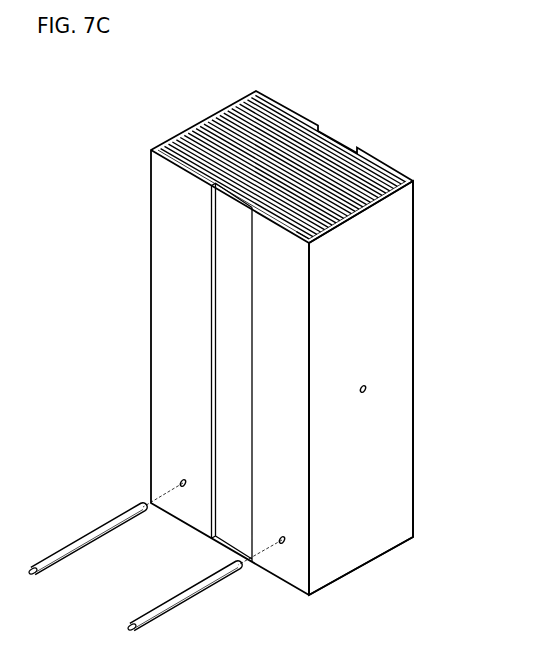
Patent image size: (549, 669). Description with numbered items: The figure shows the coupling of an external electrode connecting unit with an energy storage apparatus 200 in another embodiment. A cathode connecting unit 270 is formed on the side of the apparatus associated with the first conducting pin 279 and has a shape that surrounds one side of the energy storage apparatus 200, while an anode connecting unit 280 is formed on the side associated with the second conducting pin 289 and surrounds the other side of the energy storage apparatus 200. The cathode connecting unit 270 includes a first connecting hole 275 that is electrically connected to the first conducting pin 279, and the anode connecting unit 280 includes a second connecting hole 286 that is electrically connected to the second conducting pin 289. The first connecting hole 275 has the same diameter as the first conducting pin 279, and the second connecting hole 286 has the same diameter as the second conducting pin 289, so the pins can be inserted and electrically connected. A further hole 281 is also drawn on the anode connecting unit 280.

The cathode connecting unit 270 is at (158, 233).
The energy storage apparatus 200 is at (227, 382).
The anode connecting unit 280 is at (395, 252).
The first connecting hole 275 is at (181, 483).
The side hole 281 is at (367, 388).
The second connecting hole 286 is at (287, 540).
The first conducting pin 279 is at (82, 543).
The second conducting pin 289 is at (178, 605).